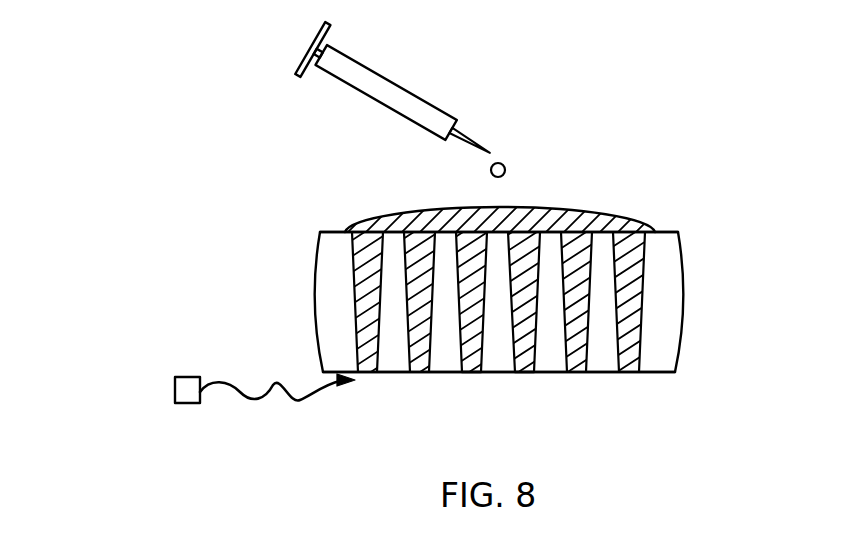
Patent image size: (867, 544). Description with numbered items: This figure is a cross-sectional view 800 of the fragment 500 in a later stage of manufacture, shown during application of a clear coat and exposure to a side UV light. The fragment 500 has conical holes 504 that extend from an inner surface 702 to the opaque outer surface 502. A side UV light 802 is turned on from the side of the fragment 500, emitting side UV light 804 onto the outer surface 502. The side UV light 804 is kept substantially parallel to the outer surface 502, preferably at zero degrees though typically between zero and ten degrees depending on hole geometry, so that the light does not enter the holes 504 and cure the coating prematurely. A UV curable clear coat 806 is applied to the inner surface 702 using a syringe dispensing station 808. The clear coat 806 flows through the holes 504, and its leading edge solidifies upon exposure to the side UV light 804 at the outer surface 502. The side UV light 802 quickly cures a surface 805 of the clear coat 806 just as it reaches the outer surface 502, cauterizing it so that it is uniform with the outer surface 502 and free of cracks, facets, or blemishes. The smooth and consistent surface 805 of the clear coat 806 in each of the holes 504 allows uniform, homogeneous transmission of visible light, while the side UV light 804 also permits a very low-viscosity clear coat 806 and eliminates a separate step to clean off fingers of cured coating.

The drug delivery system 800 is at (190, 172).
The side UV light 802 is at (182, 377).
The side UV light 804 is at (300, 400).
The fragment 500 is at (317, 262).
The inner surface 702 is at (670, 230).
The opaque outer surface 502 is at (672, 373).
The holes 504 is at (538, 265).
The surface of the clear coat 805 is at (473, 372).
The clear coat 806 is at (385, 210).
The syringe dispensing station 808 is at (423, 100).